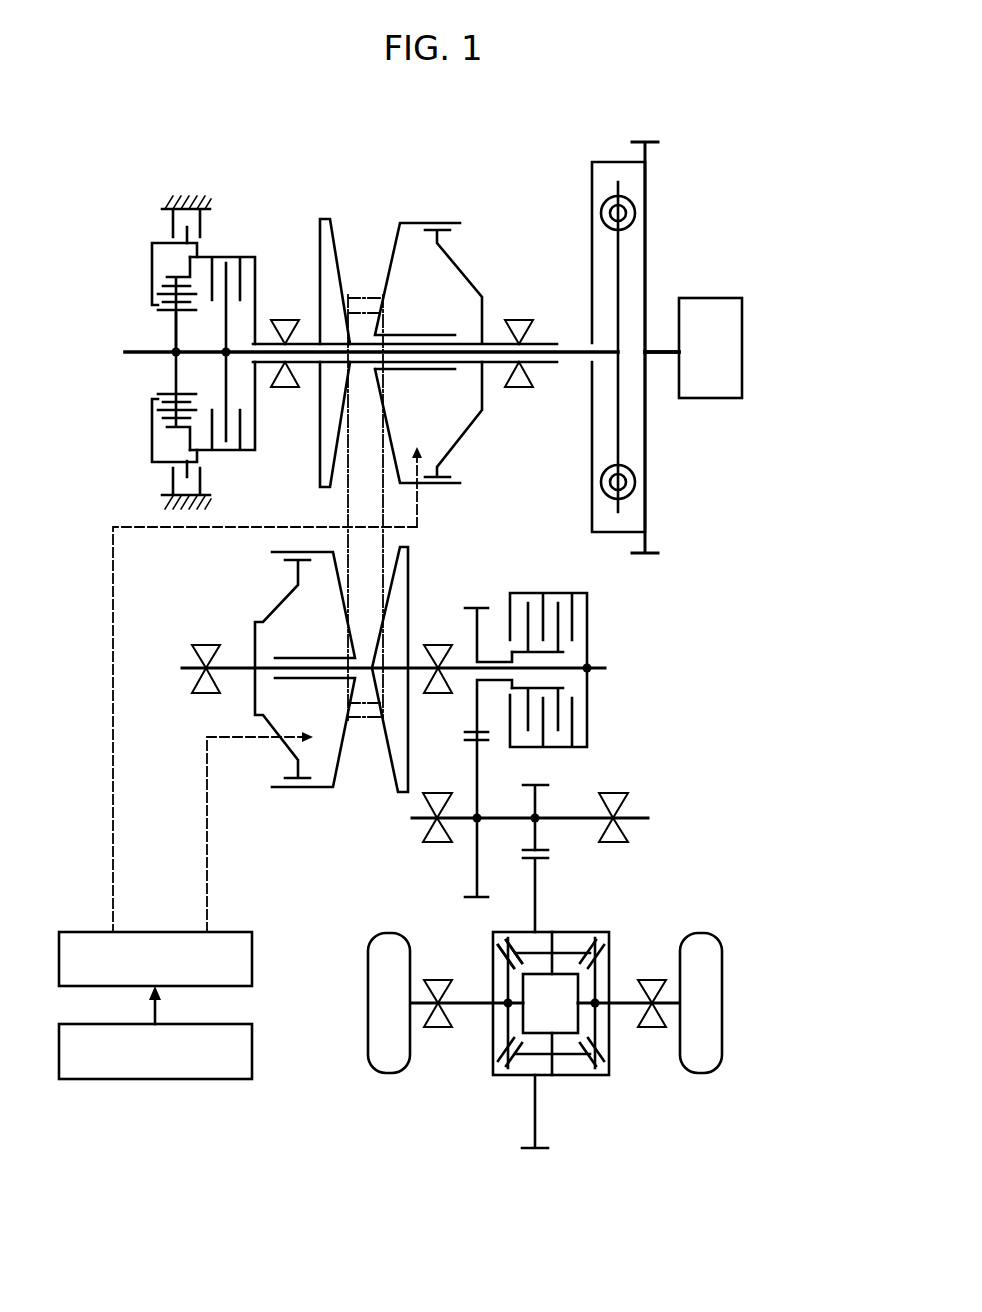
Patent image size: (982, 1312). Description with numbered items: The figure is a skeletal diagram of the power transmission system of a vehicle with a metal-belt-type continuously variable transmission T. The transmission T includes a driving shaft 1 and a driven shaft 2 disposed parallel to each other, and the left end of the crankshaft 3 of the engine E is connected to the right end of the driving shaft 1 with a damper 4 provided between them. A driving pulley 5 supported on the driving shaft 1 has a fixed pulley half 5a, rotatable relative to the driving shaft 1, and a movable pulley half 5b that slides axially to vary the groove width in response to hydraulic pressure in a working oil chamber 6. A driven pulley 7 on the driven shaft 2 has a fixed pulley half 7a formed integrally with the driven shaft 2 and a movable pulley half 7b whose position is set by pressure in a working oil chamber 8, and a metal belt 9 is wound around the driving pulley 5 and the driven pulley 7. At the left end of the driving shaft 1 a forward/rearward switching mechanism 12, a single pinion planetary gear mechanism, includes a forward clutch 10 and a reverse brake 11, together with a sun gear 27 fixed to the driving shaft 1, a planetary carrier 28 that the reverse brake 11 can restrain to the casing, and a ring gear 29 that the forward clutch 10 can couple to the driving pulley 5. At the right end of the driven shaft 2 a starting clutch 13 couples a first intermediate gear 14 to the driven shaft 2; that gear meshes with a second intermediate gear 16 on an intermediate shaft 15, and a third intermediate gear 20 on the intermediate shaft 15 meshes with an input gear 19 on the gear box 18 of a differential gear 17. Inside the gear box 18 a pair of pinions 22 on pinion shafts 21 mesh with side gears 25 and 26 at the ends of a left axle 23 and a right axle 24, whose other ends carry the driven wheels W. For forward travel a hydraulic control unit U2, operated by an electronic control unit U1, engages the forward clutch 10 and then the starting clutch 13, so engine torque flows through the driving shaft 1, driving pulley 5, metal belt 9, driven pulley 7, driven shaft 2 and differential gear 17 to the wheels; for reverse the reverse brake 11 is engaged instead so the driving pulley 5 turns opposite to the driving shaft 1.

The driving shaft 1 is at (493, 352).
The driven shaft 2 is at (465, 668).
The crankshaft 3 is at (660, 355).
The damper 4 is at (665, 213).
The driving pulley 5 is at (390, 301).
The fixed pulley half 5a is at (340, 233).
The movable pulley half 5b is at (397, 232).
The working oil chamber 6 is at (415, 301).
The driven pulley 7 is at (340, 717).
The fixed pulley half 7a is at (393, 770).
The movable pulley half 7b is at (337, 770).
The working oil chamber 8 is at (301, 638).
The metal belt 9 is at (348, 512).
The forward clutch 10 is at (229, 462).
The reverse brake 11 is at (158, 481).
The forward/rearward switching mechanism 12 is at (160, 357).
The starting clutch 13 is at (543, 590).
The first intermediate gear 14 is at (477, 605).
The intermediate shaft 15 is at (503, 816).
The second intermediate gear 16 is at (470, 898).
The differential gear 17 is at (556, 1006).
The gear box 18 is at (592, 934).
The input gear 19 is at (548, 857).
The third intermediate gear 20 is at (545, 785).
The pinion shaft 21 is at (553, 935).
The pinion 22 is at (517, 940).
The left axle 23 is at (467, 1005).
The right axle 24 is at (625, 1005).
The side gear 25 is at (493, 958).
The side gear 26 is at (605, 955).
The sun gear 27 is at (170, 313).
The planetary carrier 28 is at (152, 430).
The ring gear 29 is at (167, 277).
The engine E is at (712, 298).
The metal-belt-type continuously variable transmission T is at (433, 523).
The driven wheel W is at (390, 1075).
The electronic control unit U1 is at (252, 1050).
The hydraulic control unit U2 is at (252, 955).